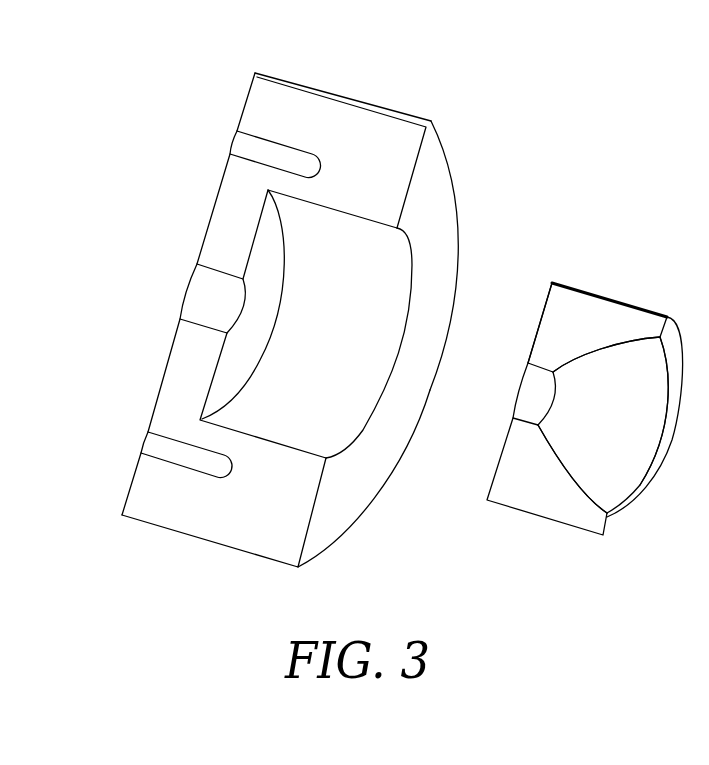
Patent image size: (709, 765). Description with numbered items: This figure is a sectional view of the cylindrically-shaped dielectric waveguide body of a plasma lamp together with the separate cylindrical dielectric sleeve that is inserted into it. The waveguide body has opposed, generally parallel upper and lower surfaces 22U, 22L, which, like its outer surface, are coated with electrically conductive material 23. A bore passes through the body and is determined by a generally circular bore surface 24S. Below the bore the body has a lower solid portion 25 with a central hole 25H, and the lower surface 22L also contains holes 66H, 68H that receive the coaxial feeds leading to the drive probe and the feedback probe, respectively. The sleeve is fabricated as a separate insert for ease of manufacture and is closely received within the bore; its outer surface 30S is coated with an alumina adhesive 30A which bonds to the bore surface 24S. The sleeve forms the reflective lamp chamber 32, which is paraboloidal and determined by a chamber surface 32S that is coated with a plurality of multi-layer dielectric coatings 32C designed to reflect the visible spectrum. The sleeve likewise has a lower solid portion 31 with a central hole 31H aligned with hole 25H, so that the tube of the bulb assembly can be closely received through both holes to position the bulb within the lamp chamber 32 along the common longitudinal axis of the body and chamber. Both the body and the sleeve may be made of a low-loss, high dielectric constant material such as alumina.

The upper surface 22U is at (452, 220).
The lower surface 22L is at (245, 102).
The hole 66H is at (238, 143).
The lower solid portion 25 is at (248, 232).
The central hole 25H is at (208, 293).
The hole 68H is at (157, 442).
The bore surface 24S is at (361, 323).
The electrically conductive material 23 is at (360, 505).
The alumina adhesive 30A is at (585, 389).
The outer surface 30S is at (610, 297).
The lower solid portion 31 is at (585, 331).
The central hole 31H is at (537, 393).
The multi-layer dielectric coatings 32C is at (625, 392).
The lamp chamber 32 is at (619, 432).
The chamber surface 32S is at (627, 478).